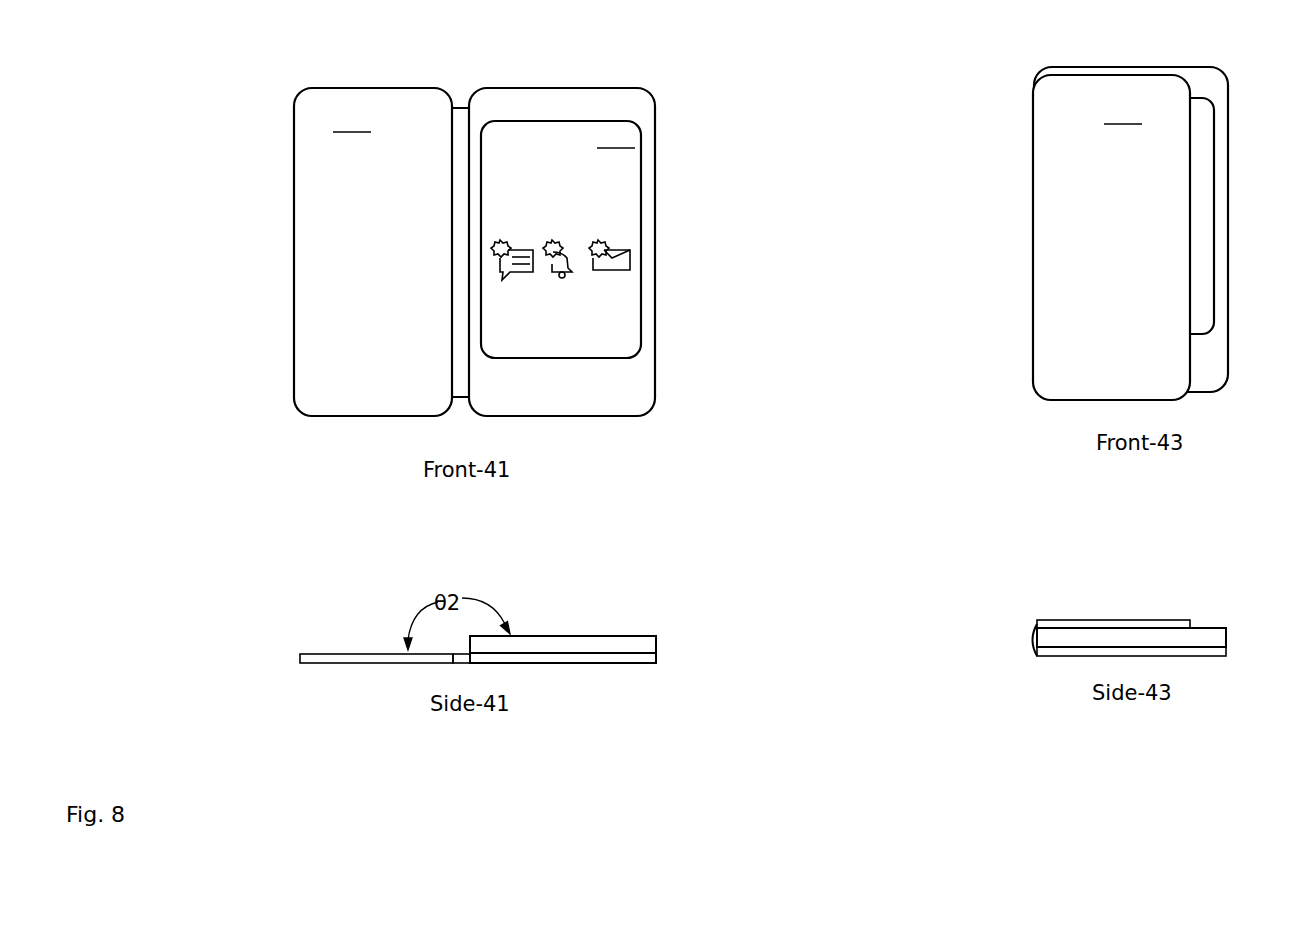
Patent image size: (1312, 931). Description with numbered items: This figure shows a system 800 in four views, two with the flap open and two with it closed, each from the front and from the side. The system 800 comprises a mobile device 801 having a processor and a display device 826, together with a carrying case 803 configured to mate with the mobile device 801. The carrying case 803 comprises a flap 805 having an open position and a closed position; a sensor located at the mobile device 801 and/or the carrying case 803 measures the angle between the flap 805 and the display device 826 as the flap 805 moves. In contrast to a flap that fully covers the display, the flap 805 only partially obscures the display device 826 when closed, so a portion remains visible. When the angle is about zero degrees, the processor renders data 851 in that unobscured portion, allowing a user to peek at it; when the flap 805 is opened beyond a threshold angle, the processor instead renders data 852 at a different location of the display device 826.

The system 800 is at (176, 723).
The mobile device 801 is at (648, 398).
The carrying case 803 is at (409, 96).
The flap 805 is at (328, 658).
The display device 826 is at (1207, 118).
The data 851 is at (1230, 284).
The data 852 is at (640, 321).